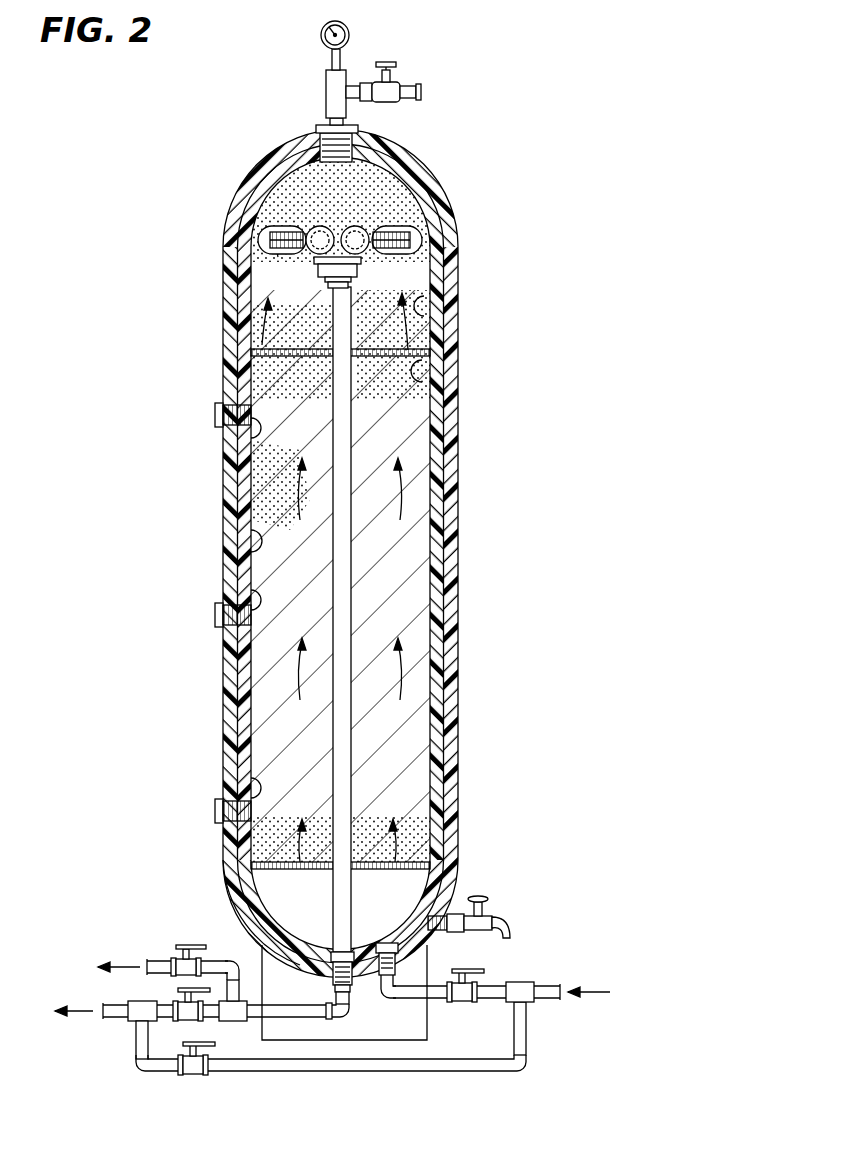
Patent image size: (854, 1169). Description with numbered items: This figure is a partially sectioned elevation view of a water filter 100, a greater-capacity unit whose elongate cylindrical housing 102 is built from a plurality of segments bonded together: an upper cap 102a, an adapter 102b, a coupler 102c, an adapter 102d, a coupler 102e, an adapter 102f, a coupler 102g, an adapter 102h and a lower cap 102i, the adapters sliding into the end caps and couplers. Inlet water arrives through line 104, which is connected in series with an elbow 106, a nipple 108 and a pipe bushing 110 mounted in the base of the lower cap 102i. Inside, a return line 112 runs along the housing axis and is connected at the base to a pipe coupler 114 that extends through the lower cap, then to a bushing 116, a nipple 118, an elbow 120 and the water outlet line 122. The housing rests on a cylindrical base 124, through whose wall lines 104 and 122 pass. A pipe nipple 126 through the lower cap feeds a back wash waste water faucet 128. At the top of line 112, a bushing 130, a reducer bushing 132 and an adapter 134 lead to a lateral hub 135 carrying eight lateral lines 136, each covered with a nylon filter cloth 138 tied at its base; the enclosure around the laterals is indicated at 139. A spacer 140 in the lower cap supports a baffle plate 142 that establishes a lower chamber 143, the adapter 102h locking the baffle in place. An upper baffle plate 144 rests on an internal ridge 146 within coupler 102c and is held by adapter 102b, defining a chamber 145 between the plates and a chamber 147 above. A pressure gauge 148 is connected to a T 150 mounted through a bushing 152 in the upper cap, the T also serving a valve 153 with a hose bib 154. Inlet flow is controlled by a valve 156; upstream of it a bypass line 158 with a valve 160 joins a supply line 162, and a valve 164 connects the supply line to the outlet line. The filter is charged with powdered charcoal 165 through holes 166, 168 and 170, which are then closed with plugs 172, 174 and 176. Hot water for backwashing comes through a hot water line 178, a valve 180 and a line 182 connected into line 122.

The water filter 100 is at (198, 117).
The housing 102 is at (172, 519).
The upper cap 102a is at (420, 170).
The adapter 102b is at (448, 285).
The coupler 102c is at (452, 325).
The adapter 102d is at (446, 410).
The coupler 102e is at (447, 472).
The adapter 102f is at (446, 557).
The coupler 102g is at (447, 650).
The adapter 102h is at (447, 752).
The lower cap 102i is at (450, 832).
The water inlet line 104 is at (440, 999).
The elbow 106 is at (392, 1000).
The nipple 108 is at (405, 988).
The pipe bushing 110 is at (400, 956).
The return line 112 is at (333, 570).
The pipe coupler 114 is at (338, 952).
The bushing 116 is at (336, 993).
The nipple 118 is at (350, 1010).
The elbow 120 is at (340, 1020).
The water outlet line 122 is at (300, 1017).
The base 124 is at (262, 1030).
The pipe nipple 126 is at (462, 912).
The back wash waste water faucet 128 is at (488, 914).
The bushing 130 is at (336, 288).
The reducer bushing 132 is at (330, 280).
The adapter 134 is at (325, 268).
The lateral hub 135 is at (318, 262).
The lateral lines 136 is at (310, 228).
The nylon filter cloth 138 is at (412, 238).
The distributor housing 139 is at (372, 218).
The spacer 140 is at (234, 858).
The baffle plate 142 is at (398, 855).
The chamber 143 is at (242, 905).
The baffle plate 144 is at (360, 375).
The chamber 145 is at (252, 540).
The internal ridge 146 is at (442, 372).
The chamber 147 is at (440, 306).
The pressure gauge 148 is at (352, 38).
The T 150 is at (327, 80).
The bushing 152 is at (320, 126).
The valve 153 is at (395, 76).
The hose bib 154 is at (420, 92).
The valve 156 is at (462, 1004).
The water bypass line 158 is at (260, 1071).
The valve 160 is at (193, 1076).
The supply line 162 is at (106, 1005).
The valve 164 is at (182, 1000).
The powdered charcoal 165 is at (300, 180).
The hole 166 is at (247, 430).
The hole 168 is at (250, 600).
The hole 170 is at (248, 785).
The plug 172 is at (216, 413).
The plug 174 is at (216, 617).
The plug 176 is at (216, 810).
The hot water line 178 is at (155, 960).
The valve 180 is at (186, 948).
The line 182 is at (238, 962).